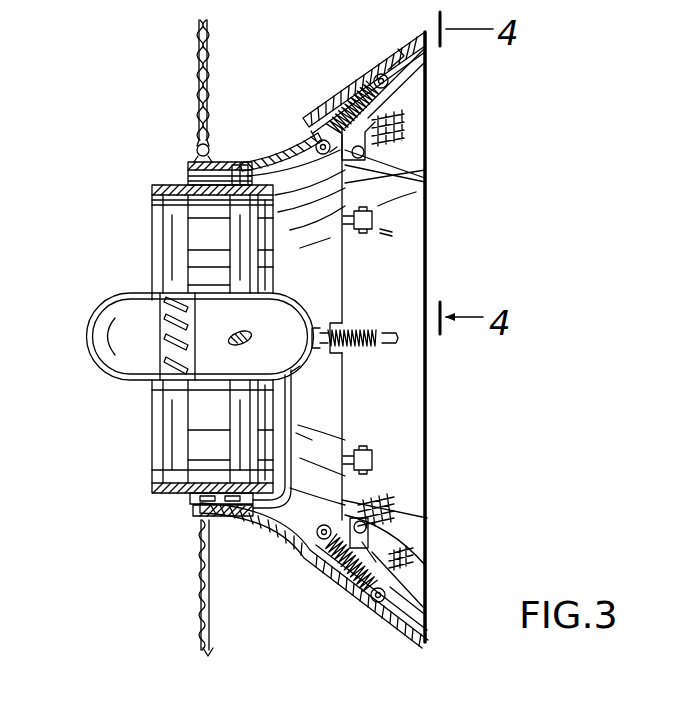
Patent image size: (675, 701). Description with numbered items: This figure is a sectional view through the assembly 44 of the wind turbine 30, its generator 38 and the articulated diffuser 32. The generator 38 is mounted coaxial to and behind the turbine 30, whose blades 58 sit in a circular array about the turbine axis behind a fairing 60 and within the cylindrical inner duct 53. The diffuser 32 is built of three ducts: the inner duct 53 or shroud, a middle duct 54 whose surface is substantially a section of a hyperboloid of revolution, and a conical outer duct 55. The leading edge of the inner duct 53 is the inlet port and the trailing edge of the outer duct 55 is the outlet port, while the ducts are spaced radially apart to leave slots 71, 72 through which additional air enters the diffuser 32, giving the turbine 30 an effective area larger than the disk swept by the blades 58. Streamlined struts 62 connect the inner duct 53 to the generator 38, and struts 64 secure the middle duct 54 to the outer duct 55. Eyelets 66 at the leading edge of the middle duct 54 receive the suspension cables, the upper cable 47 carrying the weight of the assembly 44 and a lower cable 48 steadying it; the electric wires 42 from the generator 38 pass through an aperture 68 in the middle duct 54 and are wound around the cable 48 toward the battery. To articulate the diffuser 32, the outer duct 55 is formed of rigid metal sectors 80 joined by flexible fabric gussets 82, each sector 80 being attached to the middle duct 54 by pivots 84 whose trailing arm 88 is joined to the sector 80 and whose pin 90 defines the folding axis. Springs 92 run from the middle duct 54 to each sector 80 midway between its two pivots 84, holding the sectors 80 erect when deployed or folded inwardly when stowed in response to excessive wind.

The wind turbine 30 is at (88, 358).
The articulated diffuser 32 is at (347, 82).
The generator 38 is at (306, 364).
The electric wires 42 is at (292, 437).
The assembly 44 is at (130, 118).
The upper cable 47 is at (200, 72).
The lower cable 48 is at (200, 616).
The inner duct 53 is at (152, 188).
The middle duct 54 is at (273, 160).
The outer duct 55 is at (386, 62).
The blades 58 is at (170, 225).
The fairing 60 is at (93, 322).
The struts 62 is at (410, 145).
The struts 64 is at (250, 163).
The eyelets 66 is at (205, 147).
The aperture 68 is at (200, 508).
The slot 71 is at (190, 180).
The slot 72 is at (302, 127).
The rigid sectors 80 is at (418, 73).
The flexible gussets 82 is at (412, 532).
The pivots 84 is at (380, 128).
The trailing arm 88 is at (365, 152).
The pin 90 is at (370, 158).
The springs 92 is at (378, 105).